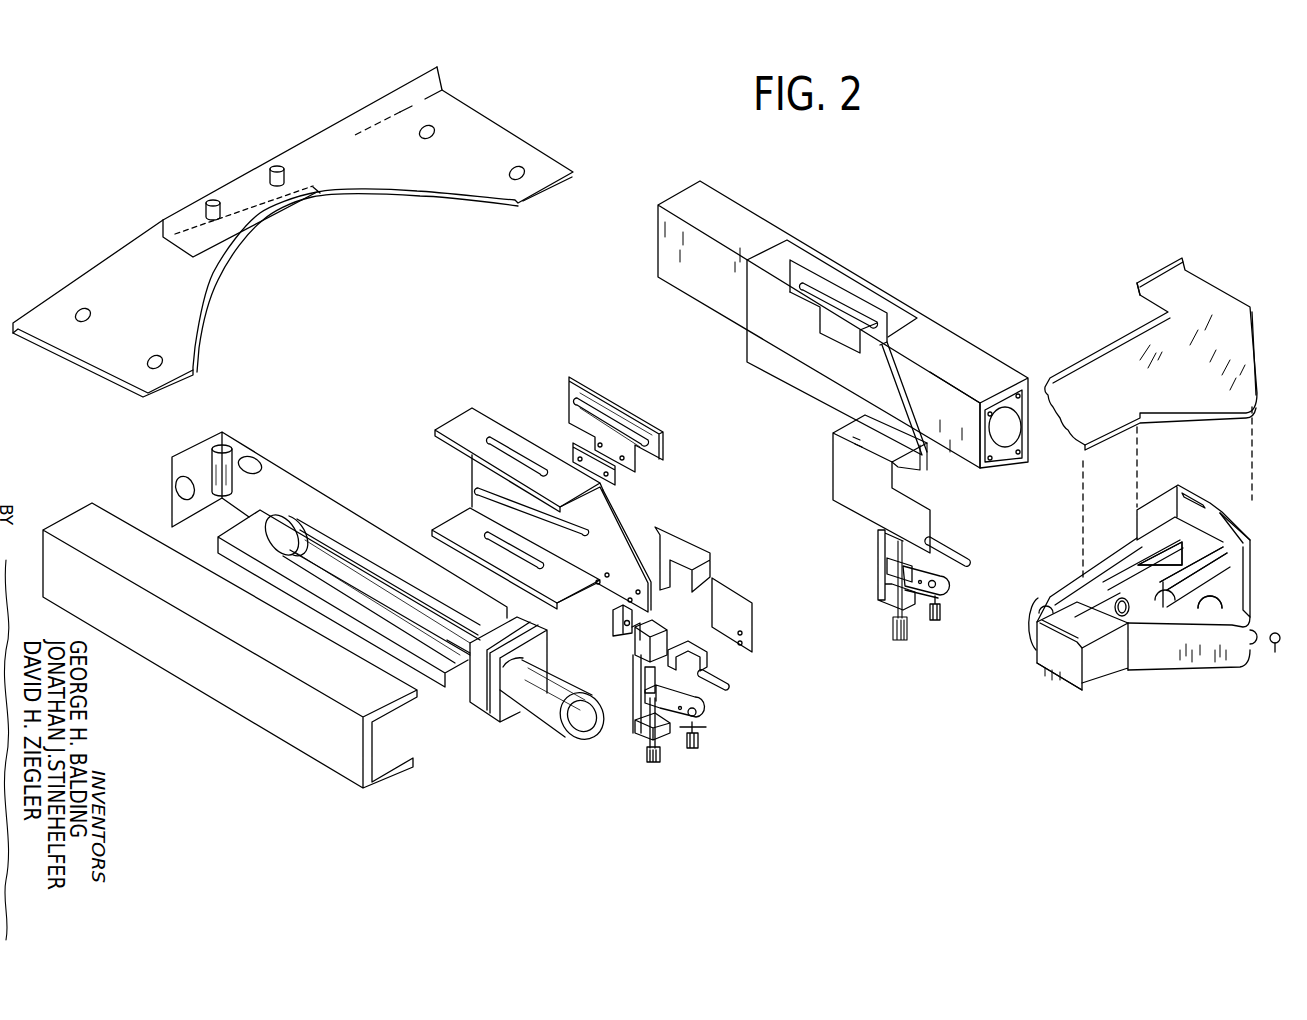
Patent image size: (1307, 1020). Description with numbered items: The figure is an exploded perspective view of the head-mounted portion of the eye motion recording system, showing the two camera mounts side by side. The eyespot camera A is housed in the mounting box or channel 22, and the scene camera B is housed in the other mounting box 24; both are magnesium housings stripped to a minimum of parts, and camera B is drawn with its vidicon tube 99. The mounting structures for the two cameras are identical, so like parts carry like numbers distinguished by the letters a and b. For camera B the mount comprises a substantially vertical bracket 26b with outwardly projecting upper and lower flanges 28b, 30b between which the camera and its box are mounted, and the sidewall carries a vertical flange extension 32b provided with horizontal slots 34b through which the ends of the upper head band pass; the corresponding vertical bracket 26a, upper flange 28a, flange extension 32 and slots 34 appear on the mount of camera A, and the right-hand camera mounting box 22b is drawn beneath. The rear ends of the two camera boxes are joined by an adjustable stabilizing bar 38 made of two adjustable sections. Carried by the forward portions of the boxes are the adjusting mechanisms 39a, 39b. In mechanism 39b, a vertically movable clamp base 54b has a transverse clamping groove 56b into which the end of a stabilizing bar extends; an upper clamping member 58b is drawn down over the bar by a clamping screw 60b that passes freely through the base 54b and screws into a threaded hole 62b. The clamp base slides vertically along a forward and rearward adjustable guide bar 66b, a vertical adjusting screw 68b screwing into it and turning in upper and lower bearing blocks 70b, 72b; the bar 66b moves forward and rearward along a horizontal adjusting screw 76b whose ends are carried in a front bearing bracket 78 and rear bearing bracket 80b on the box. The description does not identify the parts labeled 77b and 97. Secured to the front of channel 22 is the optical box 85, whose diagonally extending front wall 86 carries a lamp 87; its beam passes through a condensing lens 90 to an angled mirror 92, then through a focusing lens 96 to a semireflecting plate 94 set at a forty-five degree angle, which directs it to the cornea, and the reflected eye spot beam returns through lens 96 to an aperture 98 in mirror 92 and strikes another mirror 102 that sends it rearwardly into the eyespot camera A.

The mounting box or channel 22 is at (790, 204).
The right camera mounting box 22b is at (292, 474).
The mounting box 24 is at (360, 474).
The vertical bracket 26a is at (747, 342).
The vertical bracket 26b is at (472, 477).
The upper flange 28a is at (767, 250).
The upper flange 28b is at (455, 417).
The lower flange 30b is at (458, 518).
The vertical flange extension 32 is at (807, 300).
The vertical flange extension 32b is at (647, 427).
The horizontal slots 34 is at (878, 339).
The horizontal slots 34b is at (577, 410).
The adjustable stabilizing bar 38 is at (237, 183).
The adjusting mechanism 39a is at (952, 615).
The adjusting mechanism 39b is at (686, 714).
The clamp base 54b is at (704, 728).
The transverse clamping groove 56b is at (680, 718).
The upper clamping member 58b is at (692, 699).
The clamping screw 60b is at (698, 746).
The threaded hole 62b is at (700, 713).
The guide bar 66b is at (638, 684).
The vertical adjusting screw 68b is at (642, 728).
The upper bearing block 70b is at (640, 655).
The lower bearing block 72b is at (648, 752).
The horizontal adjusting screw 76b is at (630, 632).
The bracket 77b is at (678, 643).
The front bearing bracket 78 is at (730, 683).
The rear bearing bracket 80b is at (613, 623).
The optical box 85 is at (1072, 580).
The front wall 86 is at (1233, 597).
The lamp 87 is at (1267, 654).
The condensing lens 90 is at (1217, 610).
The angled reflecting plate or mirror 92 is at (1210, 583).
The semireflecting plate 94 is at (1093, 677).
The focusing lens 96 is at (1116, 603).
The bar face 97 is at (977, 350).
The aperture 98 is at (1188, 584).
The vidicon tube 99 is at (512, 706).
The mirror 102 is at (1237, 530).
The eyespot camera A is at (996, 468).
The scene camera B is at (507, 716).